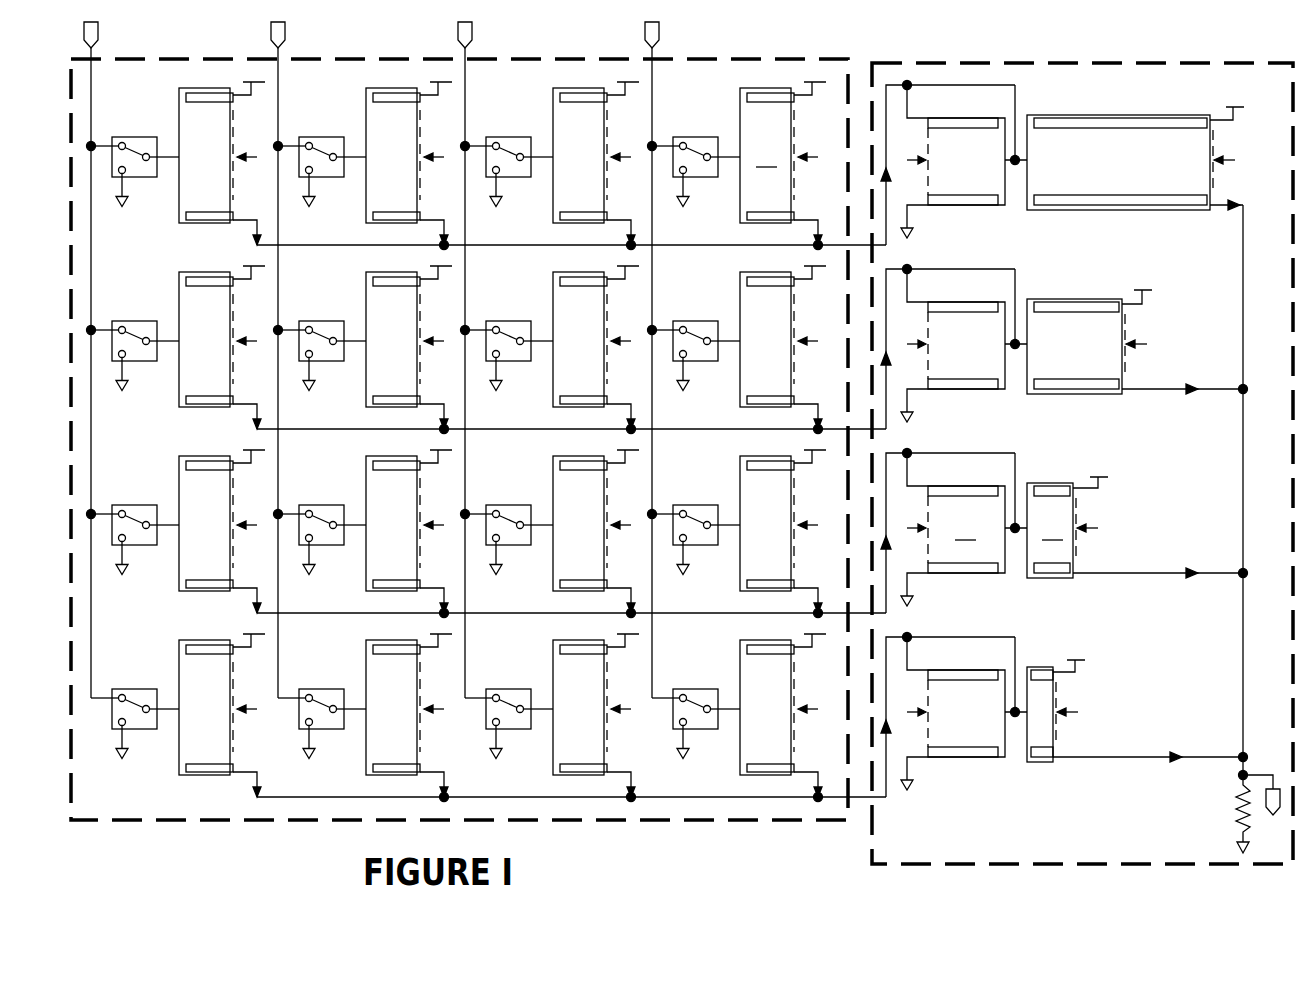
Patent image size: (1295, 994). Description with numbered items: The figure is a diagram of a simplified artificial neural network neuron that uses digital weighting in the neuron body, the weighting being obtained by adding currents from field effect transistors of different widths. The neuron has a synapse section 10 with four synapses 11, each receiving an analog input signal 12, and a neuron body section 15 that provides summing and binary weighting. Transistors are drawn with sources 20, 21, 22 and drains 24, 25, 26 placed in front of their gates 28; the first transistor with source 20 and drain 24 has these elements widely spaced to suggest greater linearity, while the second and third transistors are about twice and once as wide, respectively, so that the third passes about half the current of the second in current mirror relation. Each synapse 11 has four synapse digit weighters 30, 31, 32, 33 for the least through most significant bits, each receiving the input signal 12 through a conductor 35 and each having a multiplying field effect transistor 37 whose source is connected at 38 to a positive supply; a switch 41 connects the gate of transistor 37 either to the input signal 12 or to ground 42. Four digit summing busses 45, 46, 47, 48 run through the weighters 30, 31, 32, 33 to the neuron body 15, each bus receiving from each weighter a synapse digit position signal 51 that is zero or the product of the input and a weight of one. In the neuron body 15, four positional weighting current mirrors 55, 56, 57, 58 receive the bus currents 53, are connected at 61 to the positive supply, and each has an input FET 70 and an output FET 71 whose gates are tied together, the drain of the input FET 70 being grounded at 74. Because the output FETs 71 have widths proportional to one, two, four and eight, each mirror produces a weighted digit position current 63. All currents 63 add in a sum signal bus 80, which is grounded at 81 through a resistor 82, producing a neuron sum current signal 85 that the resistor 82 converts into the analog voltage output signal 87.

The synapse section 10 is at (176, 825).
The synapses 11 is at (508, 532).
The input signal 12 is at (99, 32).
The neuron body section 15 is at (866, 850).
The source 20 is at (787, 99).
The source 21 is at (950, 500).
The source 22 is at (1060, 498).
The drain 24 is at (775, 213).
The drain 25 is at (975, 563).
The drain 26 is at (1058, 565).
The gate 28 is at (909, 344).
The synapse digit weighter 30 is at (160, 681).
The synapse digit weighter 31 is at (160, 494).
The synapse digit weighter 32 is at (160, 310).
The synapse digit weighter 33 is at (415, 158).
The conductor 35 is at (92, 236).
The multiplying field effect transistor 37 is at (896, 413).
The positive voltage supply connection 38 is at (818, 80).
The switch 41 is at (693, 136).
The common ground connection 42 is at (687, 210).
The digit summing bus 45 is at (690, 795).
The digit summing bus 46 is at (722, 612).
The digit summing bus 47 is at (528, 428).
The digit summing bus 48 is at (538, 244).
The synapse digit position signal 51 is at (250, 238).
The digit position sum signal 53 is at (888, 175).
The positional weighting current mirror 55 is at (1006, 777).
The positional weighting current mirror 56 is at (1010, 578).
The positional weighting current mirror 57 is at (1017, 393).
The positional weighting current mirror 58 is at (1017, 209).
The positive voltage supply connection 61 is at (1230, 107).
The weighted digit position current signal 63 is at (1232, 204).
The input FET 70 is at (957, 423).
The output FET 71 is at (1131, 418).
The common ground connection 74 is at (912, 231).
The sum signal bus 80 is at (1247, 244).
The common ground connection 81 is at (1232, 849).
The resistor 82 is at (1238, 813).
The neuron sum current signal 85 is at (1238, 777).
The analog voltage output signal 87 is at (1273, 816).